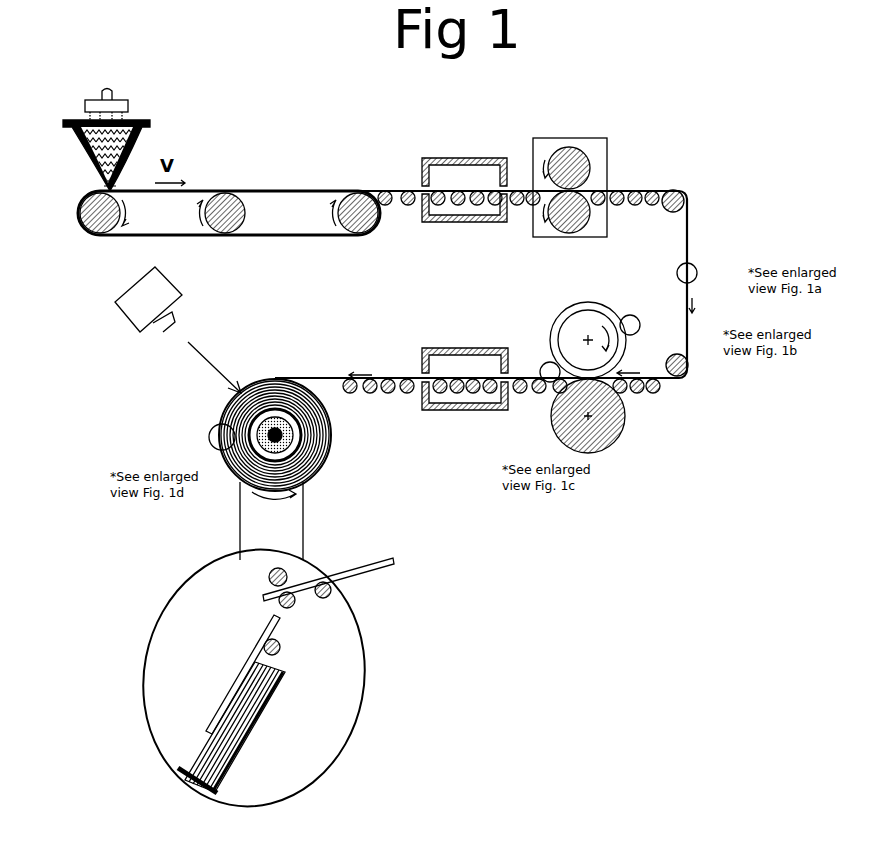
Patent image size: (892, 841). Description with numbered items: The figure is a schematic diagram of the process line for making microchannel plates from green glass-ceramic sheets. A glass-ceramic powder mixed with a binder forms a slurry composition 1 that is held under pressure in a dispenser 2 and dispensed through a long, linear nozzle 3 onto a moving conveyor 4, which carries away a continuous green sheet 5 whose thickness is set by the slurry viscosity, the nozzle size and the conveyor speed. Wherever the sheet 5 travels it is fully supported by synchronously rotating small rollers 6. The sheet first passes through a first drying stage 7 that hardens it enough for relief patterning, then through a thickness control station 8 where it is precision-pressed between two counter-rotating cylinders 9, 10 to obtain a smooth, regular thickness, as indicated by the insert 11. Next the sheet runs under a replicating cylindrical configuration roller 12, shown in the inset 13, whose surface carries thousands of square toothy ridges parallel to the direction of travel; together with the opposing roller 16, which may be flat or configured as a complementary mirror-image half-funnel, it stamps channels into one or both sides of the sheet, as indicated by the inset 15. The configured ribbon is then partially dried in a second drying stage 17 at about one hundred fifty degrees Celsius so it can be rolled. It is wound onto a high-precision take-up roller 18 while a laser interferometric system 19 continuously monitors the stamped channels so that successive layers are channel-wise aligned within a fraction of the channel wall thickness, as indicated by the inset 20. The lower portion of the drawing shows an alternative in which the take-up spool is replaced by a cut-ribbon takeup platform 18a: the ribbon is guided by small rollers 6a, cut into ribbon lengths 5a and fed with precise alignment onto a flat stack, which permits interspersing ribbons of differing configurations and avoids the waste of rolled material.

The composition 1 is at (83, 157).
The dispenser 2 is at (142, 138).
The nozzle 3 is at (93, 188).
The conveyor 4 is at (167, 237).
The sheet 5 is at (375, 192).
The small rollers 6 is at (393, 205).
The first drying stage 7 is at (475, 156).
The thickness control station 8 is at (590, 140).
The counter-rotating cylinder 9 is at (586, 222).
The counter-rotating cylinder 10 is at (586, 152).
The insert 11 is at (697, 273).
The replicating cylindrical configuration roller 12 is at (600, 304).
The inset 13 is at (641, 325).
The inset 15 is at (544, 393).
The roller 16 is at (617, 427).
The second drying stage 17 is at (460, 347).
The take-up roller 18 is at (330, 448).
The laser interferometric system 19 is at (182, 310).
The inset 20 is at (203, 443).
The cut ribbon lengths 5a is at (263, 616).
The small rollers 6a is at (297, 607).
The cut-ribbon takeup platform 18a is at (273, 693).